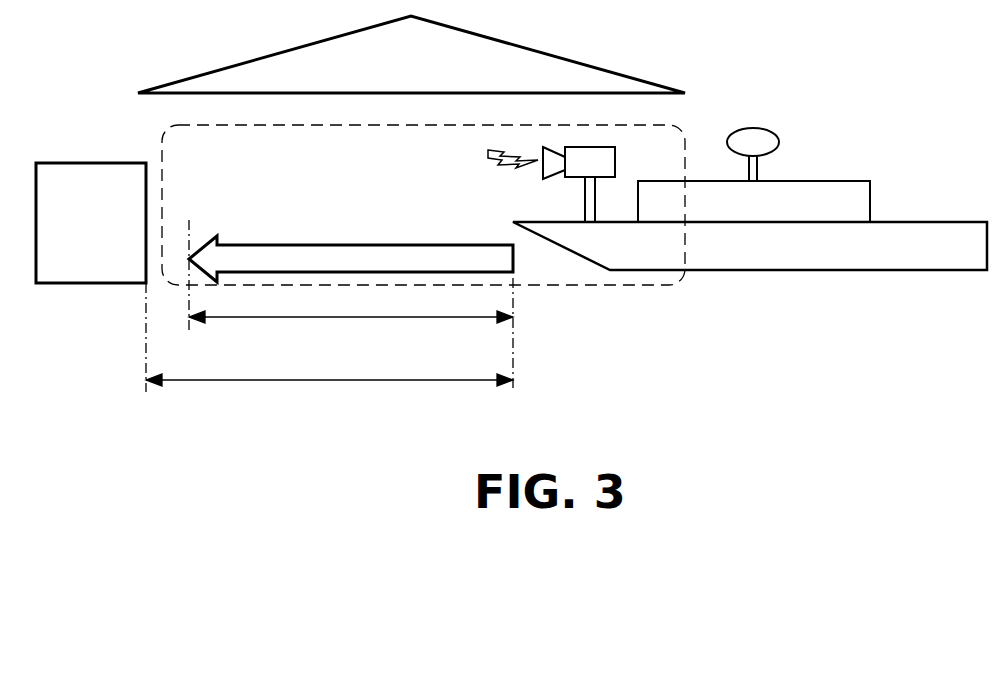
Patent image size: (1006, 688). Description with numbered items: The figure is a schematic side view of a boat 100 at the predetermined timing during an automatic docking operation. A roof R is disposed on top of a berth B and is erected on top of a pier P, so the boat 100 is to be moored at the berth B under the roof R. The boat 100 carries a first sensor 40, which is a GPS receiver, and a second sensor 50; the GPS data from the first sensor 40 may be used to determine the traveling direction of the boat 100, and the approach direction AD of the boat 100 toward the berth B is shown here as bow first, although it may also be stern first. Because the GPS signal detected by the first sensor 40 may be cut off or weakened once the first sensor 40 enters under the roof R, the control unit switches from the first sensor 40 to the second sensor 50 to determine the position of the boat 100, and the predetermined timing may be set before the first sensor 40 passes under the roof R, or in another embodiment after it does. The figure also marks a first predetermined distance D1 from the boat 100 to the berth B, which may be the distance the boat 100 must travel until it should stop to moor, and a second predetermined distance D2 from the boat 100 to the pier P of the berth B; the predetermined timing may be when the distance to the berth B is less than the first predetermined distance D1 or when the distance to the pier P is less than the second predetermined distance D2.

The roof R is at (548, 53).
The berth B is at (162, 138).
The pier P is at (90, 257).
The approach direction AD is at (351, 259).
The first predetermined distance D1 is at (351, 331).
The second predetermined distance D2 is at (329, 396).
The boat 100 is at (772, 258).
The first sensor 40 is at (765, 139).
The second sensor 50 is at (575, 170).